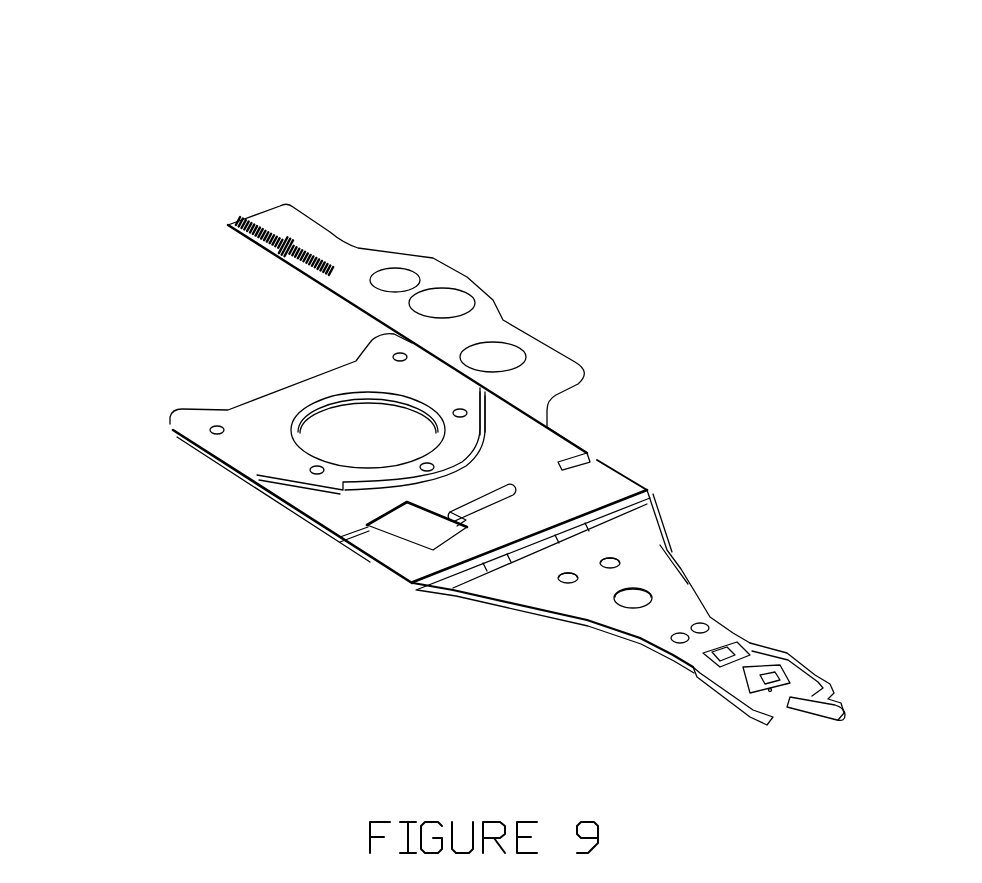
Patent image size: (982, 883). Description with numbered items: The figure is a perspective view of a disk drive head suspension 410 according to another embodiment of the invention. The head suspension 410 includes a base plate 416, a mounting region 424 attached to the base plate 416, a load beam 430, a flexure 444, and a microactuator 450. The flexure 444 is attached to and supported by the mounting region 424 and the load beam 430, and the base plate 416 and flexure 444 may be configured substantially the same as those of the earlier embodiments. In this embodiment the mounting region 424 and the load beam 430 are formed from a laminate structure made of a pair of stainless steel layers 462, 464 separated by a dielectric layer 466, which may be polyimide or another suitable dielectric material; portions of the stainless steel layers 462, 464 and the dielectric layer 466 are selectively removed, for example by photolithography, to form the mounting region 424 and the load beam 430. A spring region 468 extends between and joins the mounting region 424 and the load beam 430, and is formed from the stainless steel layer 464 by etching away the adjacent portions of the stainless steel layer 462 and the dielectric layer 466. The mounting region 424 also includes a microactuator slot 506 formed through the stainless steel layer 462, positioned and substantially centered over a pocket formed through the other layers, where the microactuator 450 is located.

The head suspension 410 is at (112, 77).
The mounting region 424 is at (569, 426).
The base plate 416 is at (250, 469).
The microactuator slot 506 is at (340, 503).
The microactuator 450 is at (396, 539).
The stainless steel layer 462 is at (613, 470).
The dielectric layer 466 is at (430, 584).
The spring region 468 is at (650, 503).
The load beam 430 is at (692, 565).
The stainless steel layer 464 is at (493, 603).
The flexure 444 is at (684, 690).